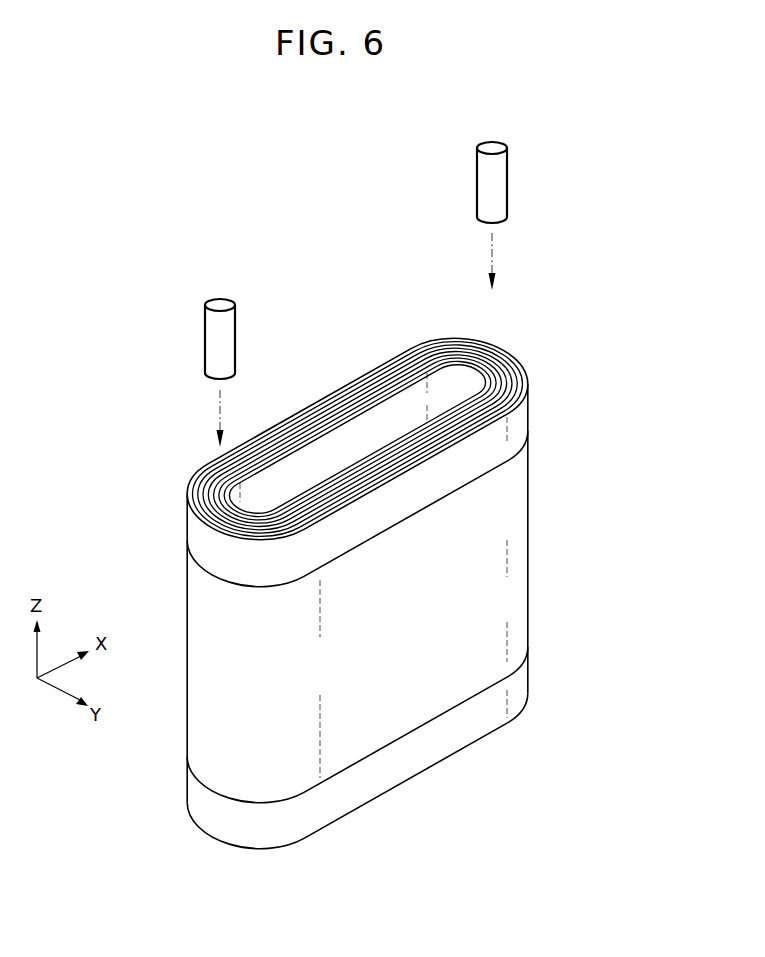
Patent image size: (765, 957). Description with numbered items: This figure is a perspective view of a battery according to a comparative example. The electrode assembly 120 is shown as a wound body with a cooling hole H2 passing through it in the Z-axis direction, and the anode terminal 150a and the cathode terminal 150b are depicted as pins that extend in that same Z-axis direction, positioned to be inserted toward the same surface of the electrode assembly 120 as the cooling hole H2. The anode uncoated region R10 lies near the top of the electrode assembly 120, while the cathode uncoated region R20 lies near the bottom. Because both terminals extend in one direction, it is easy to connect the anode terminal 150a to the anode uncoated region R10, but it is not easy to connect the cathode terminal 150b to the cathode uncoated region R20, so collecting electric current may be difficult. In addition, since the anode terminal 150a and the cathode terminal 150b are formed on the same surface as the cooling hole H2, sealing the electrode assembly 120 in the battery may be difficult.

The anode terminal 150a is at (218, 304).
The cathode terminal 150b is at (490, 147).
The cooling hole H2 is at (359, 432).
The electrode assembly 120 is at (361, 594).
The anode uncoated region R10 is at (177, 492).
The cathode uncoated region R20 is at (177, 757).